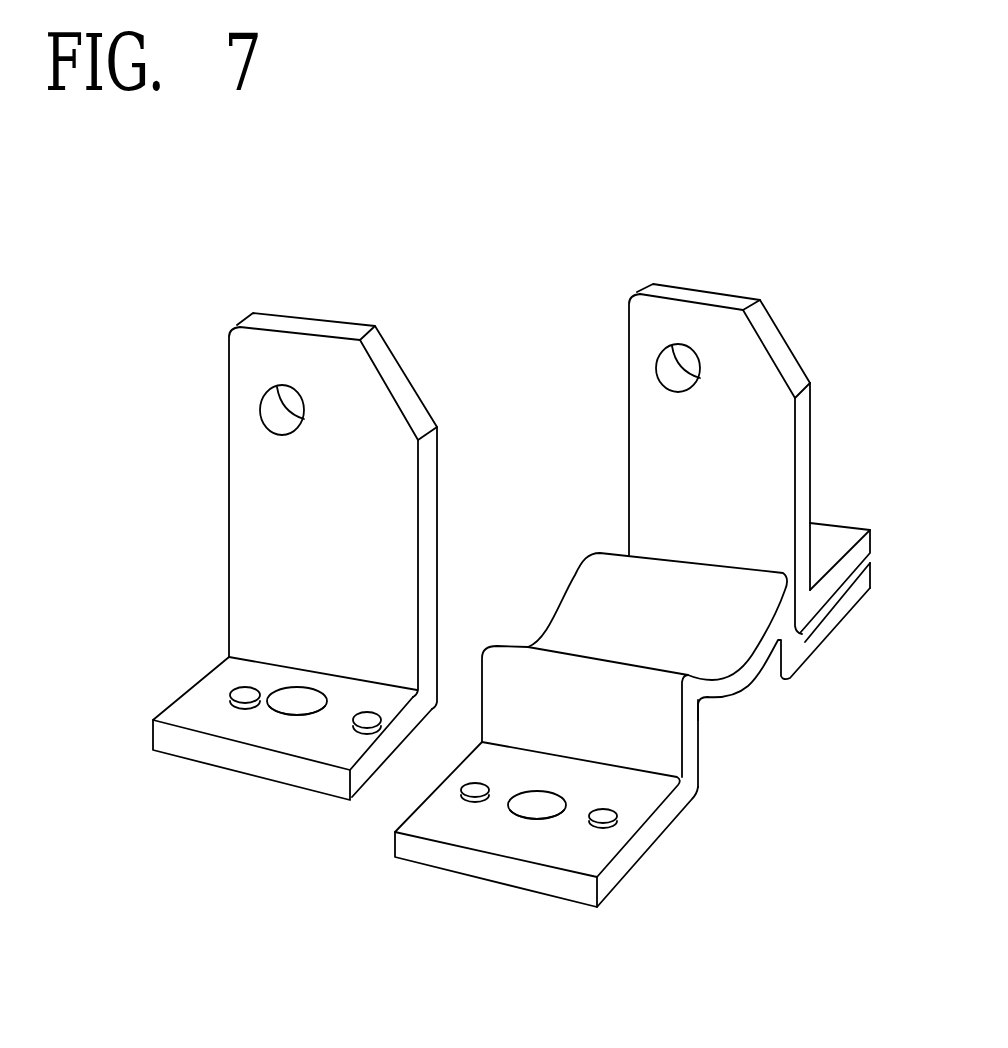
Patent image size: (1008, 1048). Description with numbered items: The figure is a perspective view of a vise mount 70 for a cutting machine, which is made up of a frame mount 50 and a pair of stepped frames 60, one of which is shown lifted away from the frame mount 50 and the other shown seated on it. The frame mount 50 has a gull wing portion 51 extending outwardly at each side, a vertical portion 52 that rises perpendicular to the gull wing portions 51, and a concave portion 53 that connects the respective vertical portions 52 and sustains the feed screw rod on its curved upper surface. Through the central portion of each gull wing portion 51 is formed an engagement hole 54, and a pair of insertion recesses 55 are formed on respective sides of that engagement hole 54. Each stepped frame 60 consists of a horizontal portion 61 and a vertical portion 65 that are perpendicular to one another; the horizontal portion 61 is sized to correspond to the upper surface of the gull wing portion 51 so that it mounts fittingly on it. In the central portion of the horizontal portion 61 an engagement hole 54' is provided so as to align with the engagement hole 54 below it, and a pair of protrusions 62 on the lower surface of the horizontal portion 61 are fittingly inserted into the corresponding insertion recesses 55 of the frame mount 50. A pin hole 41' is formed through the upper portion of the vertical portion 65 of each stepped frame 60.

The vise mount 70 is at (508, 258).
The stepped frame 60 is at (685, 472).
The vertical portion 65 is at (300, 548).
The horizontal portion 61 is at (207, 707).
The protrusions 62 is at (353, 727).
The engagement hole 54' is at (276, 759).
The pin hole 41' is at (219, 408).
The frame mount 50 is at (508, 685).
The gull wing portion 51 is at (640, 795).
The vertical portion 52 is at (690, 738).
The concave portion 53 is at (733, 643).
The engagement hole 54 is at (542, 759).
The insertion recesses 55 is at (595, 820).